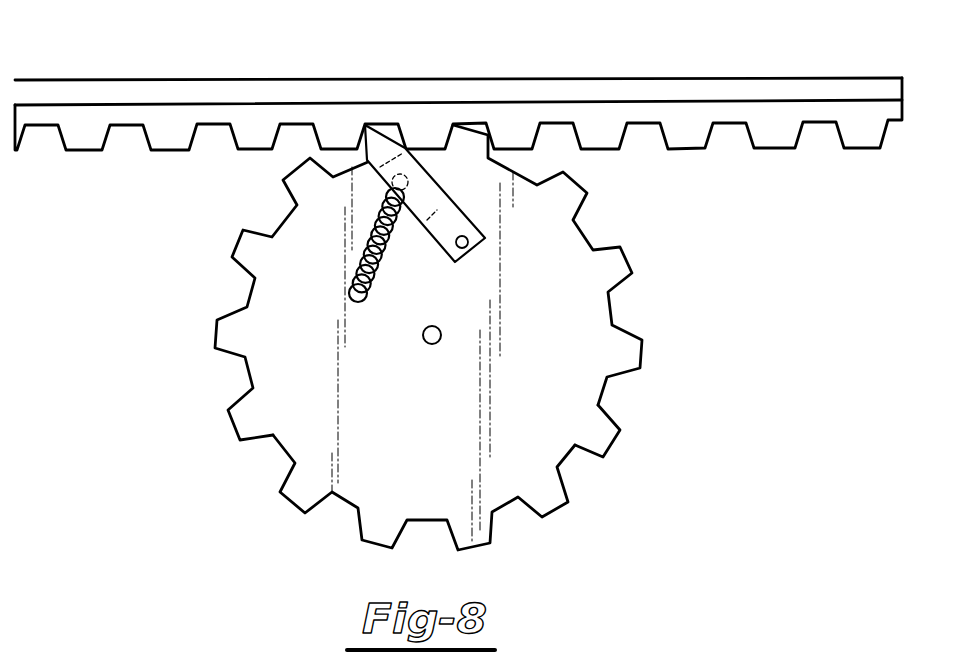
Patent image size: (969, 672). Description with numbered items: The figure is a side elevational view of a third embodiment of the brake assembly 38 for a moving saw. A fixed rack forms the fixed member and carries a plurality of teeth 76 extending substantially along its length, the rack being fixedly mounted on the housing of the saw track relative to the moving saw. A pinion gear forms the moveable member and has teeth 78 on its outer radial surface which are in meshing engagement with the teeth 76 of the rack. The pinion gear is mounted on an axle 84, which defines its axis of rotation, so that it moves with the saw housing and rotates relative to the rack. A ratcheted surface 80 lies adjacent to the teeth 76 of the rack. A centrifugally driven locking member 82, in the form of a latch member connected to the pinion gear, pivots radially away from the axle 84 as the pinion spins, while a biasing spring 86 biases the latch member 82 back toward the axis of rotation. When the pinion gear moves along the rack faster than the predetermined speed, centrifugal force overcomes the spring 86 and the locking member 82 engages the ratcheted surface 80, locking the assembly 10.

The ratchet mechanism 10 is at (458, 283).
The brake assembly 38 is at (415, 337).
The teeth 76 is at (853, 140).
The teeth 78 is at (243, 248).
The ratcheted surface 80 is at (257, 106).
The centrifugally driven locking member 82 is at (455, 202).
The axle 84 is at (432, 346).
The biasing spring 86 is at (358, 255).